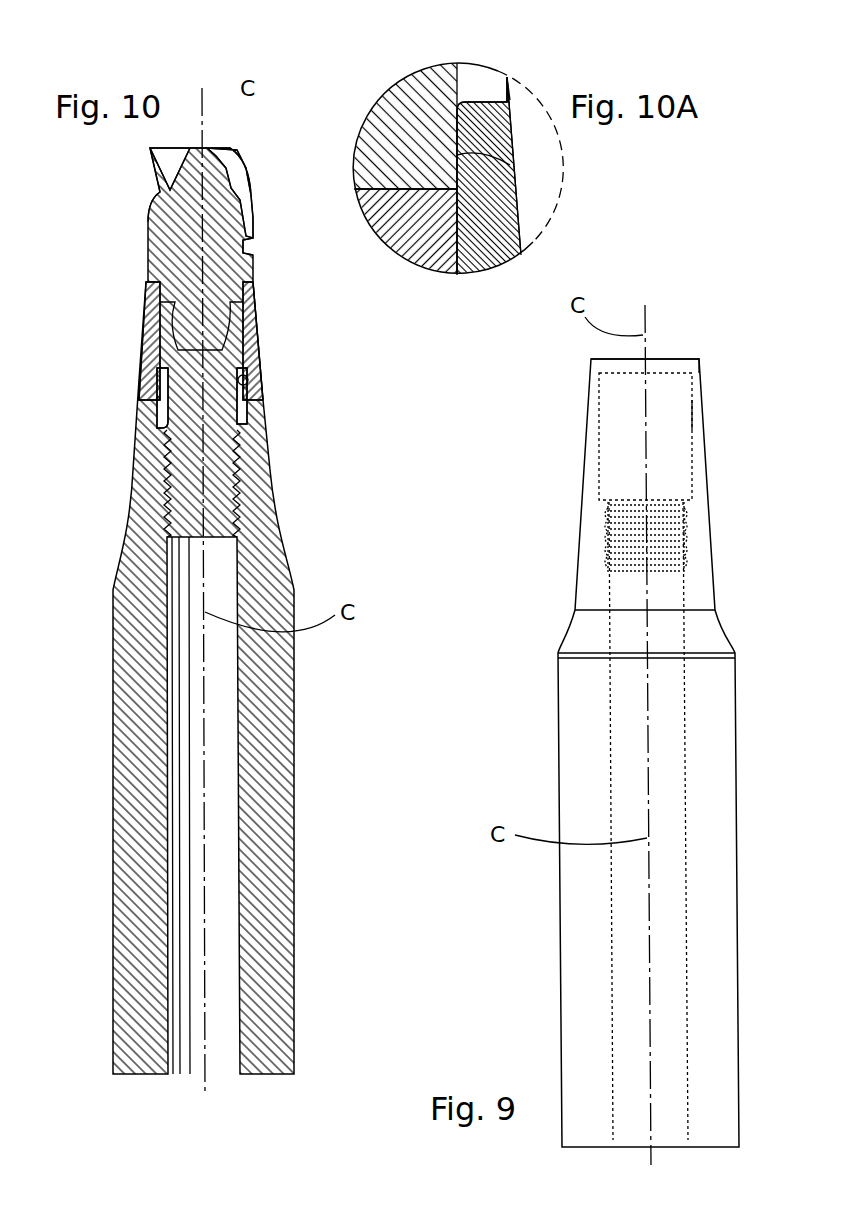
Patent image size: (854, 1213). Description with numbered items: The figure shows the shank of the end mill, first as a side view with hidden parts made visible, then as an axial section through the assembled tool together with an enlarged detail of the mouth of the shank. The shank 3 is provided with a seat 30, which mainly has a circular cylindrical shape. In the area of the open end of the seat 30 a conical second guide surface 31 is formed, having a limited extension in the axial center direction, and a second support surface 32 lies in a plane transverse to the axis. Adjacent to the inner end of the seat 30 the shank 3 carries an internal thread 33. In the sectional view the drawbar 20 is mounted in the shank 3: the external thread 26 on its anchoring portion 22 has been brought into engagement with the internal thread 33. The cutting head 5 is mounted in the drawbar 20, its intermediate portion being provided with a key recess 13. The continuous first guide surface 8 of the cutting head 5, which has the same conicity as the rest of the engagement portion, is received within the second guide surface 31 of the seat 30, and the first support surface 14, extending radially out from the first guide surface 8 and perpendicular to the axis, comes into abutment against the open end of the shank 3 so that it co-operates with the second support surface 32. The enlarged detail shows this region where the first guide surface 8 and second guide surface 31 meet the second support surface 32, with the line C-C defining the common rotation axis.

In FIG. 10, the shank 3 is at (287, 489).
In FIG. 9, the shank 3 is at (567, 554).
In FIG. 10, the cutting head 5 is at (264, 243).
In FIG. 10A, the first guide surface 8 is at (489, 176).
In FIG. 10, the key recess 13 is at (152, 280).
In FIG. 10, the first support surface 14 is at (150, 277).
In FIG. 10, the drawbar 20 is at (160, 395).
In FIG. 10, the anchoring portion 22 is at (178, 546).
In FIG. 10, the external thread 26 is at (262, 398).
In FIG. 10, the seat 30 is at (256, 380).
In FIG. 9, the seat 30 is at (690, 405).
In FIG. 10A, the second guide surface 31 is at (510, 165).
In FIG. 9, the second guide surface 31 is at (612, 368).
In FIG. 10, the second support surface 32 is at (253, 341).
In FIG. 10A, the second support surface 32 is at (508, 76).
In FIG. 9, the second support surface 32 is at (698, 360).
In FIG. 10, the internal thread 33 is at (240, 445).
In FIG. 9, the internal thread 33 is at (665, 502).